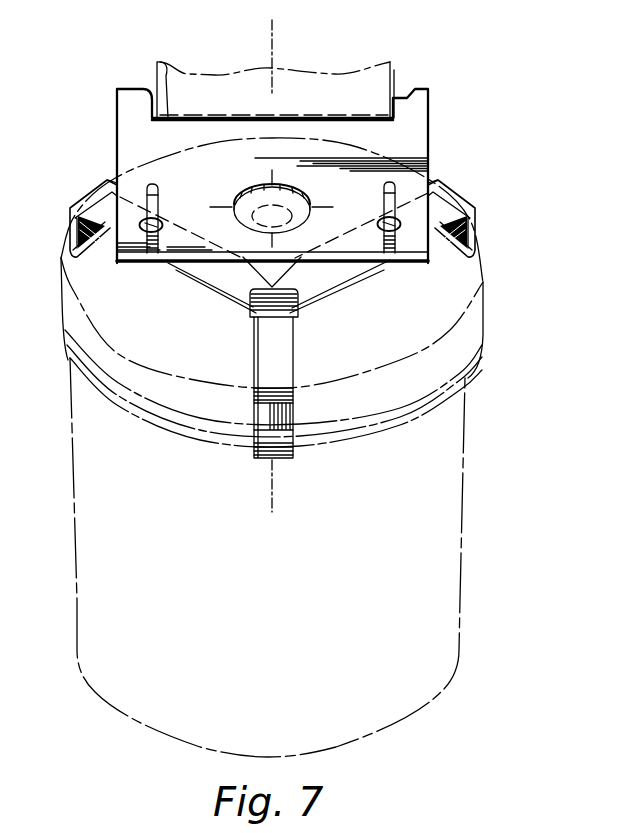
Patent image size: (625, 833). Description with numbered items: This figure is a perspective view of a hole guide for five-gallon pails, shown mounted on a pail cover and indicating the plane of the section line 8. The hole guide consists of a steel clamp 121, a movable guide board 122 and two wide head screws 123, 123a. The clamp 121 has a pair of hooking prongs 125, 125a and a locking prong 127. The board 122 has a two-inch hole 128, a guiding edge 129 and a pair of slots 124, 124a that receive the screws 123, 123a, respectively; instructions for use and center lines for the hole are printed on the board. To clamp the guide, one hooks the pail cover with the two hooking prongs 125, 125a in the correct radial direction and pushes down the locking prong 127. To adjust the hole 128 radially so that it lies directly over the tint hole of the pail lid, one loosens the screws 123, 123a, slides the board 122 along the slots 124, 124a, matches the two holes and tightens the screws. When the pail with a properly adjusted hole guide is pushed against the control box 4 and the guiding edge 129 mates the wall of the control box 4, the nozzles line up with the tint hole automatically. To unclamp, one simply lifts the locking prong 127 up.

The control box 4 is at (394, 76).
The section line 8- 8 is at (282, 33).
The steel clamp 121 is at (299, 348).
The movable guide board 122 is at (429, 135).
The wide head screw 123 is at (162, 240).
The wide head screw 123a is at (395, 240).
The slot 124 is at (143, 203).
The slot 124a is at (385, 205).
The hooking prong 125 is at (78, 216).
The hooking prong 125a is at (480, 216).
The locking prong 127 is at (262, 432).
The hole 128 is at (242, 190).
The guiding edge 129 is at (157, 70).